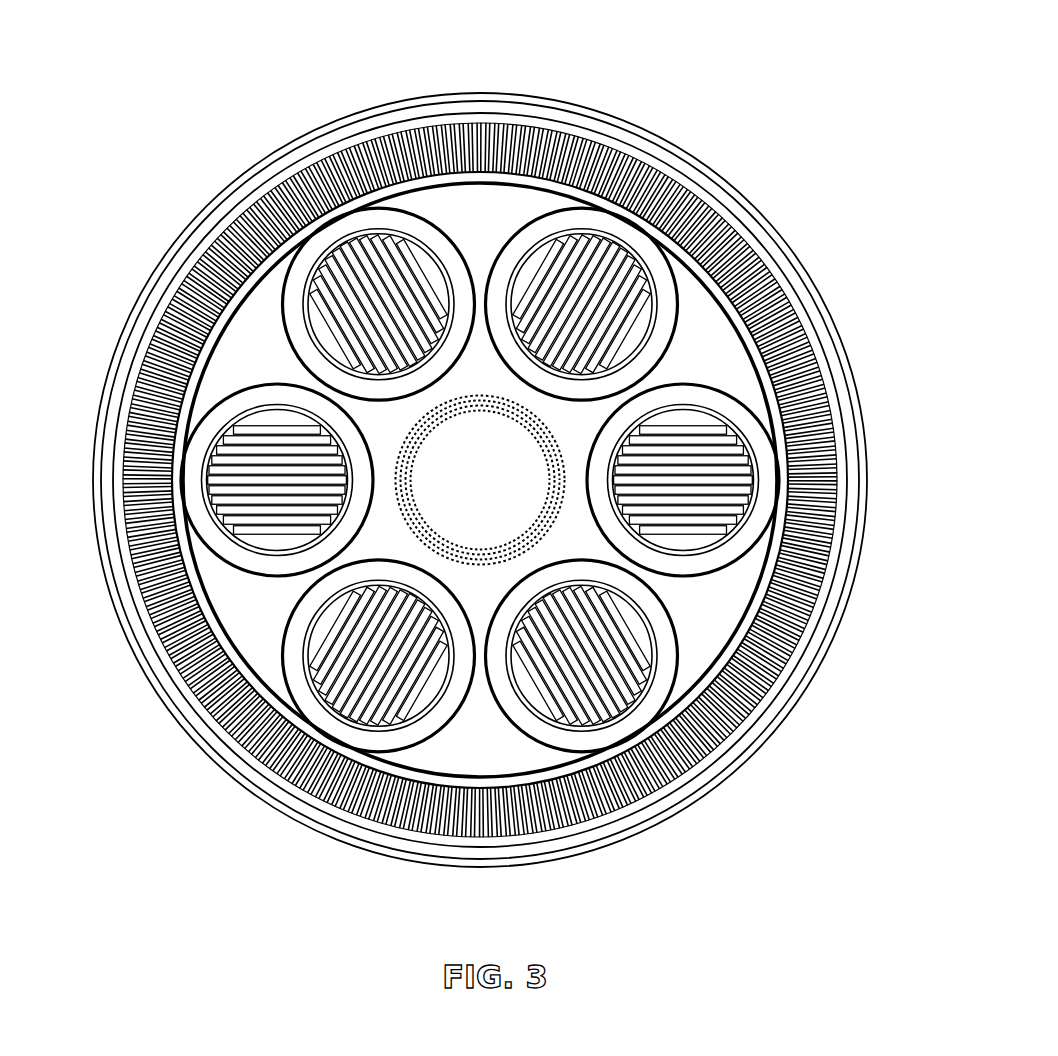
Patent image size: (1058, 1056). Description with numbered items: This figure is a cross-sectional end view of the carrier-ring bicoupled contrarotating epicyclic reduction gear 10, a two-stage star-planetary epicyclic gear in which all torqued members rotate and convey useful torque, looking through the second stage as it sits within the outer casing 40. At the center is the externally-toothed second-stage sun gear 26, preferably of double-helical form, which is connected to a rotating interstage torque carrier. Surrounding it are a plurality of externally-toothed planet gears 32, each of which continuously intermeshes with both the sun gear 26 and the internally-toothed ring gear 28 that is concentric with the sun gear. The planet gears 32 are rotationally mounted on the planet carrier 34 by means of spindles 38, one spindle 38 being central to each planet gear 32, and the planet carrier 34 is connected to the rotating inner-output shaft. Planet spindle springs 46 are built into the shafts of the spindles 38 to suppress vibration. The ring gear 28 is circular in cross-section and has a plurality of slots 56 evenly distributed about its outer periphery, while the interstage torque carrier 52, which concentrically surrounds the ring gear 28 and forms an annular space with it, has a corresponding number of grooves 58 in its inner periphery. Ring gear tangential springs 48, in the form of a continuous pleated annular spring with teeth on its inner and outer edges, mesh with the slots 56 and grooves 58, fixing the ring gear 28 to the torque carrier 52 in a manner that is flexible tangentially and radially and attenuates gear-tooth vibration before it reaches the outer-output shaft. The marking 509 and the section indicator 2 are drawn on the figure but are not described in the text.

The carrier-ring bicoupled contrarotating epicyclic reduction gear 10 is at (206, 781).
The second-stage sun gear 26 is at (465, 385).
The second-stage ring gear 28 is at (740, 315).
The second-stage planet gears 32 is at (427, 235).
The second-stage planet carrier 34 is at (512, 753).
The spindles 38 is at (318, 332).
The outer casing 40 is at (752, 200).
The planet spindle springs 46 is at (353, 343).
The ring gear tangential springs 48 is at (328, 163).
The interstage torque carrier 52 is at (600, 135).
The slots 56 is at (747, 642).
The grooves 58 is at (725, 730).
The sun gear shaft 509 is at (492, 497).
The section line 2- 2 is at (478, 520).